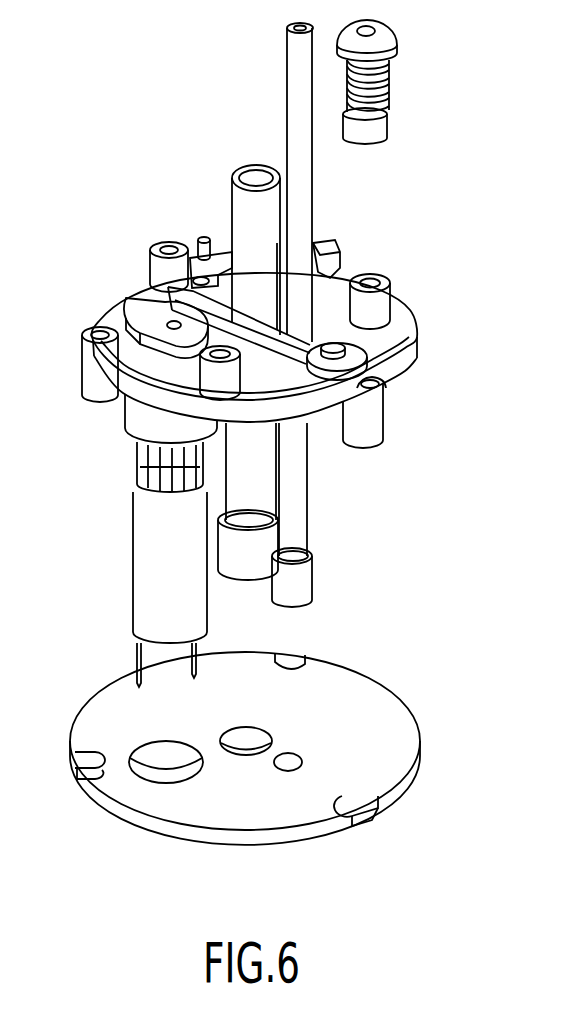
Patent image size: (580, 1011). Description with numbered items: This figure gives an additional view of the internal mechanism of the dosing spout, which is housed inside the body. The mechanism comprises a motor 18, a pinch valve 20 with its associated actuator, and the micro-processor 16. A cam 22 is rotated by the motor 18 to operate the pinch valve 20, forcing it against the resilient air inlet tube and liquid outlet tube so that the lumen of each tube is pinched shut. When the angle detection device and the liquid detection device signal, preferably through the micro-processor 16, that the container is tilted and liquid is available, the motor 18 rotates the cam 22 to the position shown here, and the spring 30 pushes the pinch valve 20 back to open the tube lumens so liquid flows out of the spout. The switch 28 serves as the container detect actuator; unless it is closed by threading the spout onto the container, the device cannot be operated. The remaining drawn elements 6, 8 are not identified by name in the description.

The rod 6 is at (307, 201).
The tube 8 is at (236, 196).
The micro-processor 16 is at (397, 716).
The motor 18 is at (147, 508).
The pinch valve 20 is at (263, 350).
The cam 22 is at (138, 312).
The switch 28 is at (387, 94).
The spring 30 is at (152, 276).